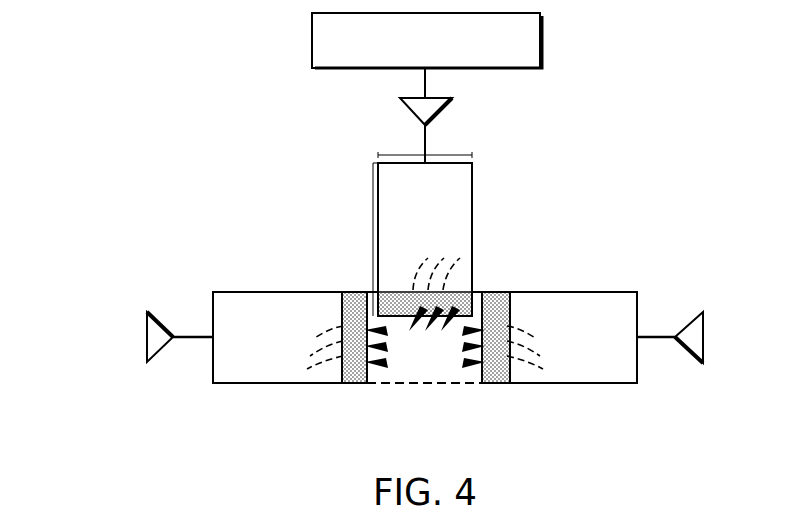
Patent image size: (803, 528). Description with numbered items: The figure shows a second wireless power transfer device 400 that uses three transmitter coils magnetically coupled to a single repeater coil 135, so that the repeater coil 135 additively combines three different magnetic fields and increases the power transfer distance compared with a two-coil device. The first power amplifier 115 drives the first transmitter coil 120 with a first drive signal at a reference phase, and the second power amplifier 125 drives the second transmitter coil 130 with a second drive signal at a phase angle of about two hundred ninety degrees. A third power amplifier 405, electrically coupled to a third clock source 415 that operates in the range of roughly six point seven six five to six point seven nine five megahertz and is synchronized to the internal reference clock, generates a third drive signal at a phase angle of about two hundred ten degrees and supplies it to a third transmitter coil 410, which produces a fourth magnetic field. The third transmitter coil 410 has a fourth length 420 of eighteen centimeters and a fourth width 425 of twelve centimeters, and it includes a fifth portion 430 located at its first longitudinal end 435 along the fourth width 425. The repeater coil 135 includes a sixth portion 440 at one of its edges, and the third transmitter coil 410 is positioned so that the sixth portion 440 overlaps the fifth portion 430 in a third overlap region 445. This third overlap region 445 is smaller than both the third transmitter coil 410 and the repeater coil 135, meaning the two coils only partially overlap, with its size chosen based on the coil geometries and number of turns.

The second wireless power transfer device 400 is at (619, 61).
The third clock source 415 is at (312, 50).
The third power amplifier 405 is at (415, 106).
The fourth width 425 is at (474, 155).
The third transmitter coil 410 is at (395, 232).
The fourth length 420 is at (372, 183).
The first transmitter coil 120 is at (255, 377).
The second transmitter coil 130 is at (558, 378).
The repeater coil 135 is at (423, 385).
The sixth portion 440 is at (377, 307).
The fifth portion 430 is at (462, 300).
The third overlap region 445 is at (410, 300).
The first longitudinal end 435 is at (477, 275).
The first power amplifier 115 is at (153, 338).
The second power amplifier 125 is at (695, 336).